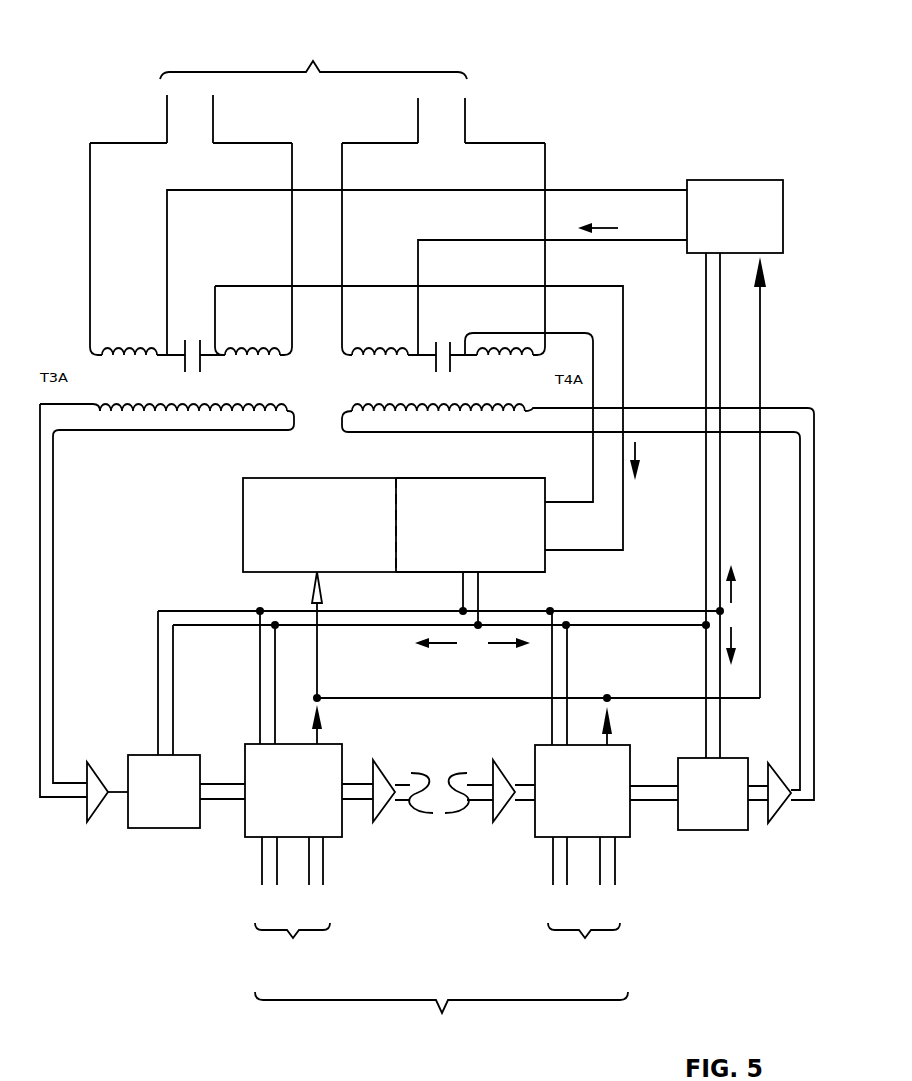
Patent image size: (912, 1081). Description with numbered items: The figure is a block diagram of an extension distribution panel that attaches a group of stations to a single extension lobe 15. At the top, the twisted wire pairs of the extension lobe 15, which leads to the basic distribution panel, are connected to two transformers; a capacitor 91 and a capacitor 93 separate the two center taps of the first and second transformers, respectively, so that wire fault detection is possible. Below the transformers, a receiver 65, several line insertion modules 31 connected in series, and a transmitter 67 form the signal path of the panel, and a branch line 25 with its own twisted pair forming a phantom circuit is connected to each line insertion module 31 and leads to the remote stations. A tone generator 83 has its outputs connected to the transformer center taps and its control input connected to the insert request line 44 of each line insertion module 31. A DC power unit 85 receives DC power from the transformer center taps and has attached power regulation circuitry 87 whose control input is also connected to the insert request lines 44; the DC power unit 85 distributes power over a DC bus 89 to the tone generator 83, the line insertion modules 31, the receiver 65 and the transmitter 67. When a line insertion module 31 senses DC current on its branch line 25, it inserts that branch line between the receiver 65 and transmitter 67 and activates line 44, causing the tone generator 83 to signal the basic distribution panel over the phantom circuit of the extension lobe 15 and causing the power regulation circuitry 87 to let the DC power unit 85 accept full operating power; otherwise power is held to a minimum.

The extension lobe 15 is at (313, 77).
The branch line 25 is at (441, 972).
The line insertion module 31 is at (342, 838).
The insert request line 44 is at (320, 738).
The receiver 65 is at (150, 829).
The transmitter 67 is at (702, 831).
The tone generator 83 is at (755, 180).
The DC power unit 85 is at (486, 478).
The power regulation circuitry 87 is at (327, 478).
The DC bus 89 is at (227, 625).
The capacitor 91 is at (196, 338).
The capacitor 93 is at (448, 338).